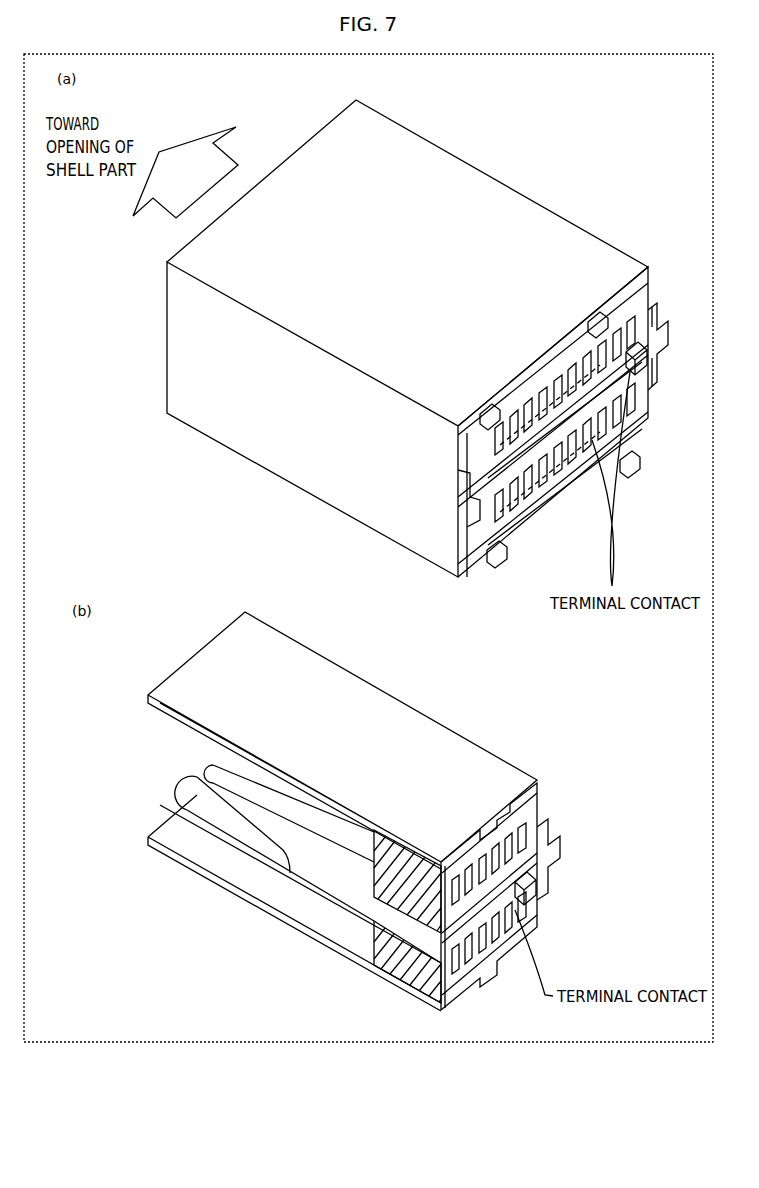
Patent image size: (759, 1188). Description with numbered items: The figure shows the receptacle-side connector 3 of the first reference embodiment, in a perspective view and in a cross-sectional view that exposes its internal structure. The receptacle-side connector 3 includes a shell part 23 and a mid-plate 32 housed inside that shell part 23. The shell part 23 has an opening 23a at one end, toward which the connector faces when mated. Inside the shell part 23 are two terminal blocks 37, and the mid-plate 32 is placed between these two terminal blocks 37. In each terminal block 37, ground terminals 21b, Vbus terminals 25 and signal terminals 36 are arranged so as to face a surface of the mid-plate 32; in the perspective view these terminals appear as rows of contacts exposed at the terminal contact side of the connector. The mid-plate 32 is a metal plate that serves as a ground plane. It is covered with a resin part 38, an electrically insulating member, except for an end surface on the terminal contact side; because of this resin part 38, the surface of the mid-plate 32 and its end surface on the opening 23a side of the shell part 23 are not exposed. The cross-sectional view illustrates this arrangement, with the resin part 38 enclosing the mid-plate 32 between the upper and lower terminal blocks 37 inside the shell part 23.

The receptacle-side connector 3 is at (628, 143).
The shell part 23 is at (520, 213).
The opening 23a is at (170, 835).
The ground terminals 21b is at (600, 318).
The Vbus terminals 25 is at (585, 340).
The mid-plate 32 is at (640, 375).
The signal terminals 36 is at (612, 325).
The terminal blocks 37 is at (456, 457).
The resin part 38 is at (400, 860).